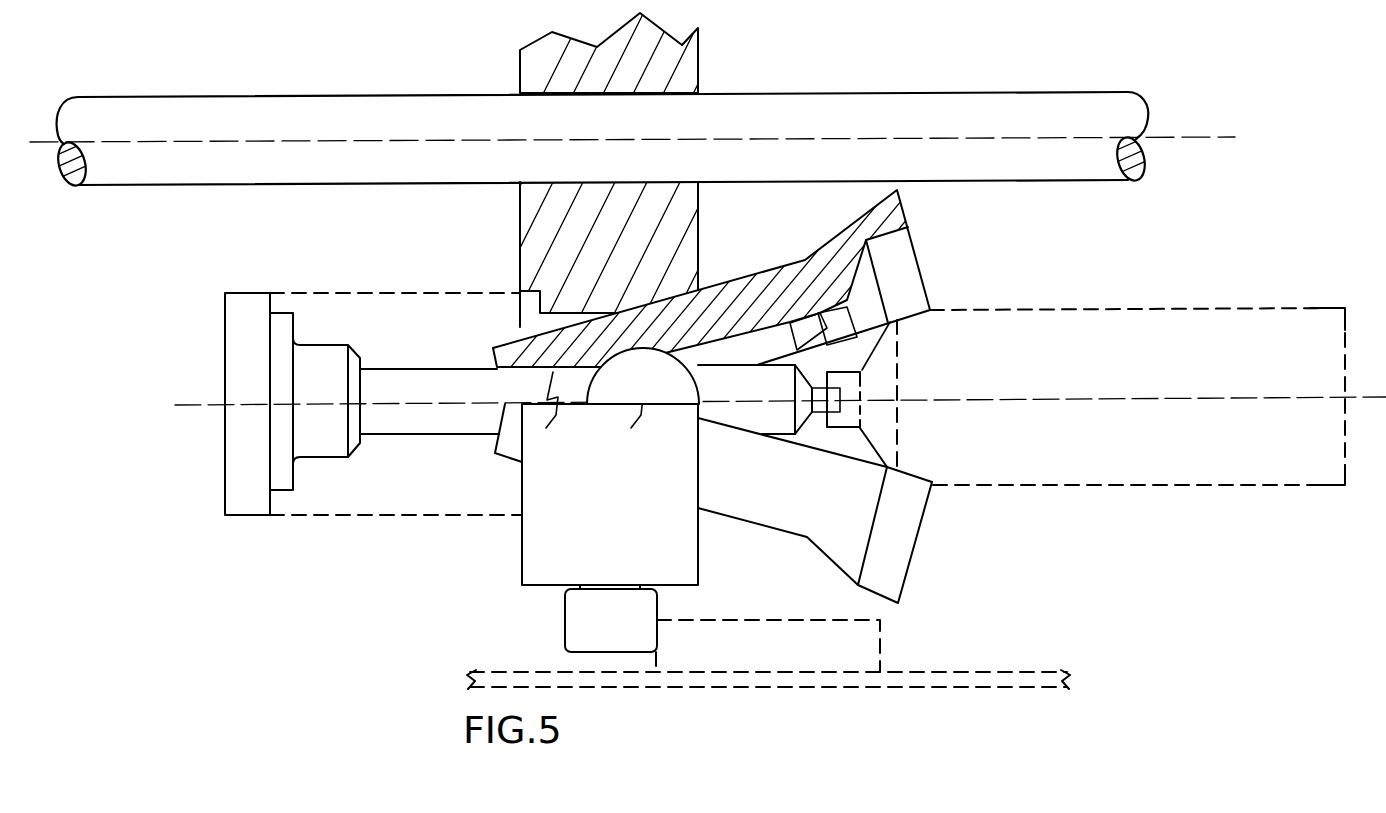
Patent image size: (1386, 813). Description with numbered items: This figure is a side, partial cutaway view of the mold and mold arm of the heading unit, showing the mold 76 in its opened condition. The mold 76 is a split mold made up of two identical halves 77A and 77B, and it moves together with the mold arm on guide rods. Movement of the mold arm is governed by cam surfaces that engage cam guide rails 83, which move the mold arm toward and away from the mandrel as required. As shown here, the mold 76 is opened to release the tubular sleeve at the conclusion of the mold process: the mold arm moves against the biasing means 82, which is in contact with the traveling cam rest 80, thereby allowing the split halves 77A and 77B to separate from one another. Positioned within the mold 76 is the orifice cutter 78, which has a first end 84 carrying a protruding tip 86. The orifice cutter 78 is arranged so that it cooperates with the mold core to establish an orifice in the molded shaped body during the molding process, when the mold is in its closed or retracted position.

The mold 76 is at (757, 510).
The mold half 77A is at (858, 210).
The mold half 77B is at (888, 583).
The orifice cutter 78 is at (418, 375).
The traveling cam rest 80 is at (235, 346).
The biasing means 82 is at (367, 488).
The cam guide rails 83 is at (573, 630).
The first end 84 is at (805, 382).
The protruding tip 86 is at (840, 408).